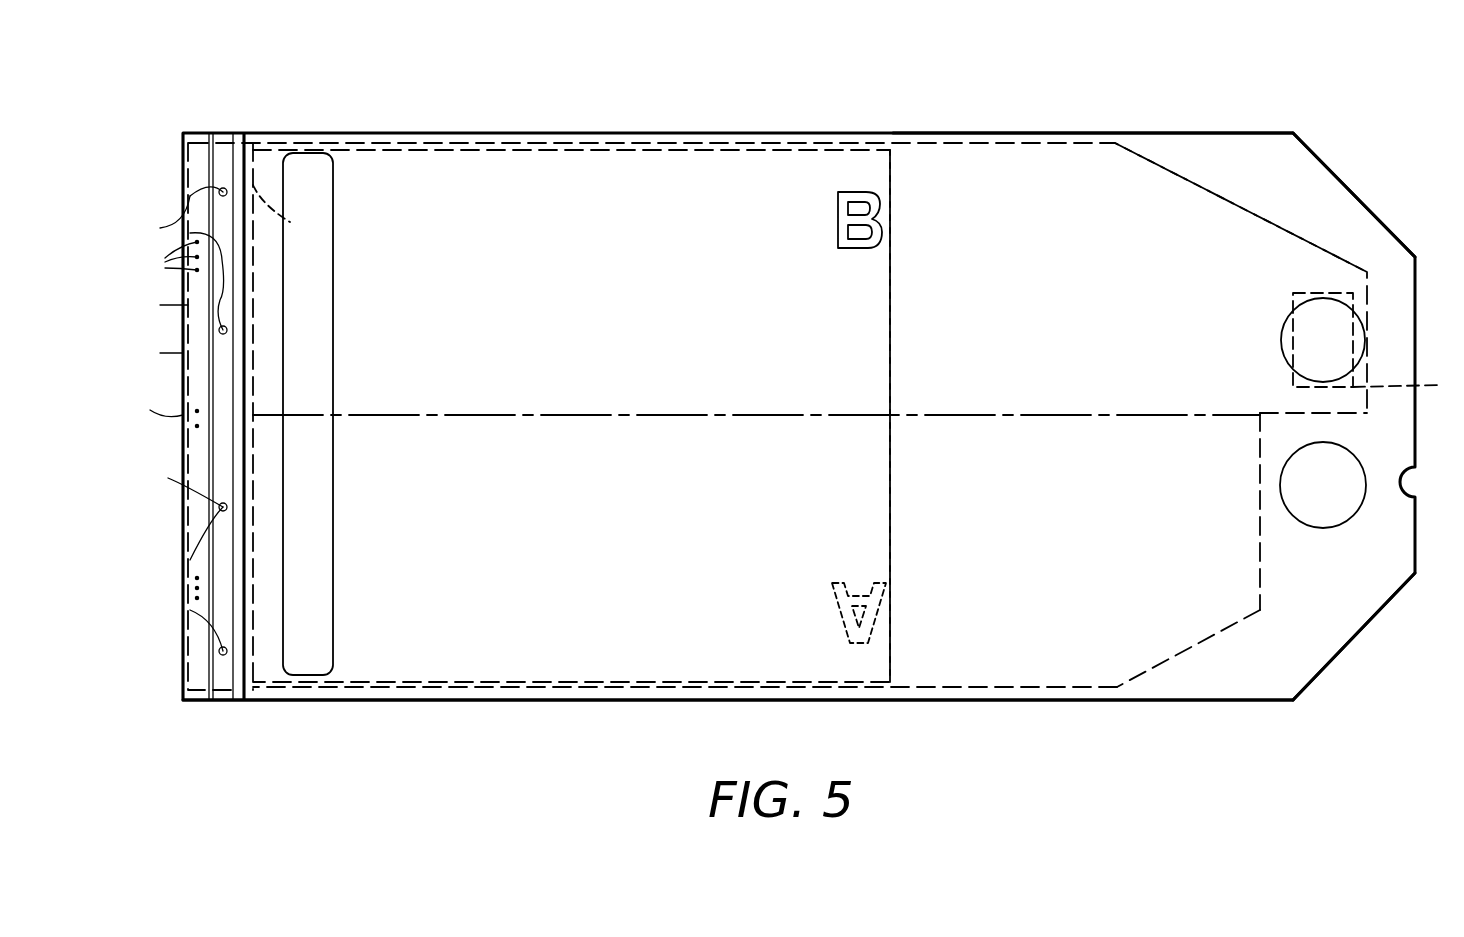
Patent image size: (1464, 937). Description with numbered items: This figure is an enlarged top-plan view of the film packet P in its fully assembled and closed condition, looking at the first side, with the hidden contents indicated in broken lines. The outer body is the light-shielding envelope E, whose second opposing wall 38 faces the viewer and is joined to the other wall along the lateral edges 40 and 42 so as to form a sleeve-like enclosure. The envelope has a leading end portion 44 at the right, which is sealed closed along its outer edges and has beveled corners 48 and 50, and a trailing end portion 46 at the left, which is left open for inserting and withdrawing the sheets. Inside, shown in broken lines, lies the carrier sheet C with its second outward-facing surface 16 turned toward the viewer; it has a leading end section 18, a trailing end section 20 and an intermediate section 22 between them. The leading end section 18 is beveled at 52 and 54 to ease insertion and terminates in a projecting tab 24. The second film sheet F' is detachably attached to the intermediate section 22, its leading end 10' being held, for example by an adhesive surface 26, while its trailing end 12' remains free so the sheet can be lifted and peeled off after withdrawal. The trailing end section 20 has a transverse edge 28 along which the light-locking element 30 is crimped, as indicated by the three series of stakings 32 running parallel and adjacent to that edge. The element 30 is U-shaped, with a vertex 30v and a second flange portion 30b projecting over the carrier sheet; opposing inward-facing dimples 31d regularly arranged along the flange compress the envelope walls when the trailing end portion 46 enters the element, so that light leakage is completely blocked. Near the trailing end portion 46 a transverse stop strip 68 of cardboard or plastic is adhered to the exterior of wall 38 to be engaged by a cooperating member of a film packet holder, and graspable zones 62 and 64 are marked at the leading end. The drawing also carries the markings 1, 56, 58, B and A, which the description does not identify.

The fold line 1 is at (962, 415).
The leading end 10' is at (932, 416).
The trailing end 12' is at (288, 217).
The second outward-facing surface 16 is at (950, 175).
The leading end section 18 is at (1033, 180).
The trailing end section 20 is at (199, 135).
The intermediate section 22 is at (533, 143).
The tab 24 is at (1340, 413).
The adhesive surface 26 is at (1408, 385).
The transverse edge 28 is at (154, 304).
The light-locking element 30 is at (152, 350).
The vertex 30v is at (150, 399).
The second flange portion 30b is at (170, 487).
The dimples 31d is at (157, 214).
The stakings 32 is at (158, 256).
The second opposing wall 38 is at (622, 362).
The lateral edge 40 is at (668, 133).
The lateral edge 42 is at (545, 703).
The leading end portion 44 is at (1158, 133).
The trailing end portion 46 is at (253, 140).
The beveled corner 48 is at (1358, 192).
The beveled corner 50 is at (1390, 605).
The beveled leading end section 52 is at (1205, 185).
The beveled leading end section 54 is at (1218, 628).
The fold line 56 is at (1210, 598).
The window 58 is at (1345, 295).
The graspable zone 62 is at (1283, 340).
The graspable zone 64 is at (1355, 497).
The stop strip 68 is at (322, 364).
The packet P is at (613, 84).
The carrier sheet C is at (735, 143).
The envelope E is at (800, 133).
The second film sheet F' is at (426, 135).
The letter B is at (860, 220).
The letter A is at (859, 613).